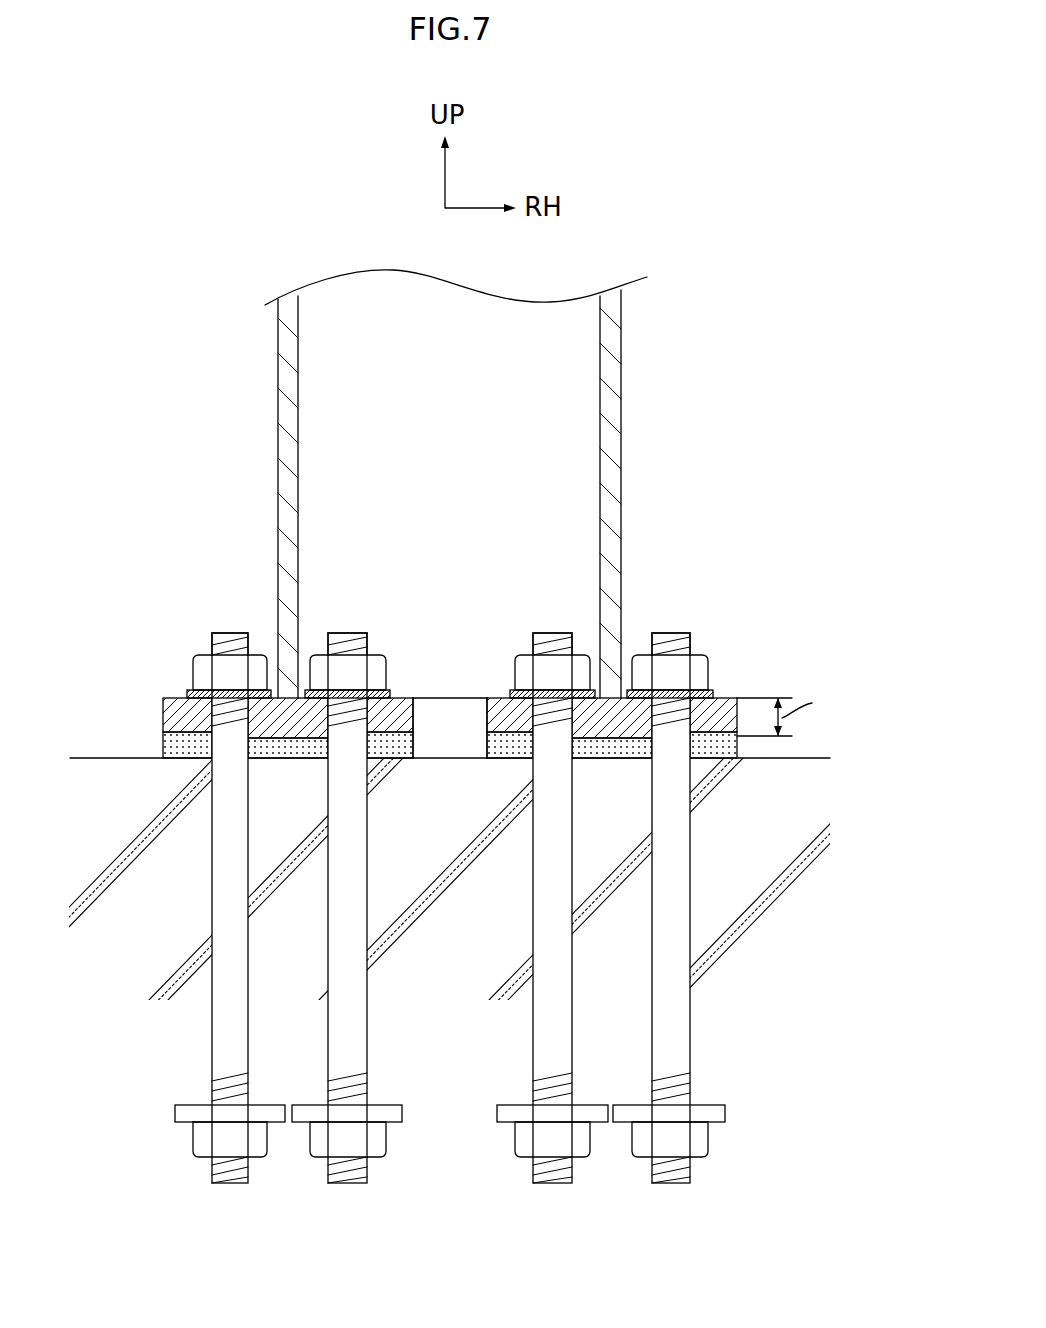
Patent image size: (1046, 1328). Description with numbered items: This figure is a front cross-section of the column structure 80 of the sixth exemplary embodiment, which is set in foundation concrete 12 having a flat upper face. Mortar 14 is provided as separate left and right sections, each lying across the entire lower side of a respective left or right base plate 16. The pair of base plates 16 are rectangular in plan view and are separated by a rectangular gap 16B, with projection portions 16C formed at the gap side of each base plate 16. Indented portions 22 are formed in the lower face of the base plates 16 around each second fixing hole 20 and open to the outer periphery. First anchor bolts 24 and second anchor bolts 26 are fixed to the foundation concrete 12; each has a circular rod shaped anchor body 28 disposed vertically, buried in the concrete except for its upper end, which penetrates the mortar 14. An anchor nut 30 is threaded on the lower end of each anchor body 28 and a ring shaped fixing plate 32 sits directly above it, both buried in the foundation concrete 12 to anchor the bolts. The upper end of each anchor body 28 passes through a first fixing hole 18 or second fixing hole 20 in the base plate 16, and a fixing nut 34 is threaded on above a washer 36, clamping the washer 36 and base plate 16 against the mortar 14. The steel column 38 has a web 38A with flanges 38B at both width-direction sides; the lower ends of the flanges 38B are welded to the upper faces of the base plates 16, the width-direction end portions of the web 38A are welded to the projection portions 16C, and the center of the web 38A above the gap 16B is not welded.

The foundation concrete 12 is at (82, 757).
The mortar 14 is at (272, 762).
The base plate 16 is at (450, 632).
The gap 16B is at (437, 700).
The projection portion 16C is at (411, 697).
The first fixing hole 18 is at (196, 688).
The second fixing hole 20 is at (392, 697).
The indented portion 22 is at (163, 743).
The first anchor bolt 24 is at (232, 632).
The second anchor bolt 26 is at (352, 632).
The anchor body 28 is at (212, 890).
The anchor nut 30 is at (193, 1140).
The fixing plate 32 is at (175, 1113).
The fixing nut 34 is at (205, 660).
The washer 36 is at (388, 692).
The steel column 38 is at (453, 484).
The web 38A is at (585, 372).
The flange 38B is at (278, 480).
The column structure 80 is at (475, 675).